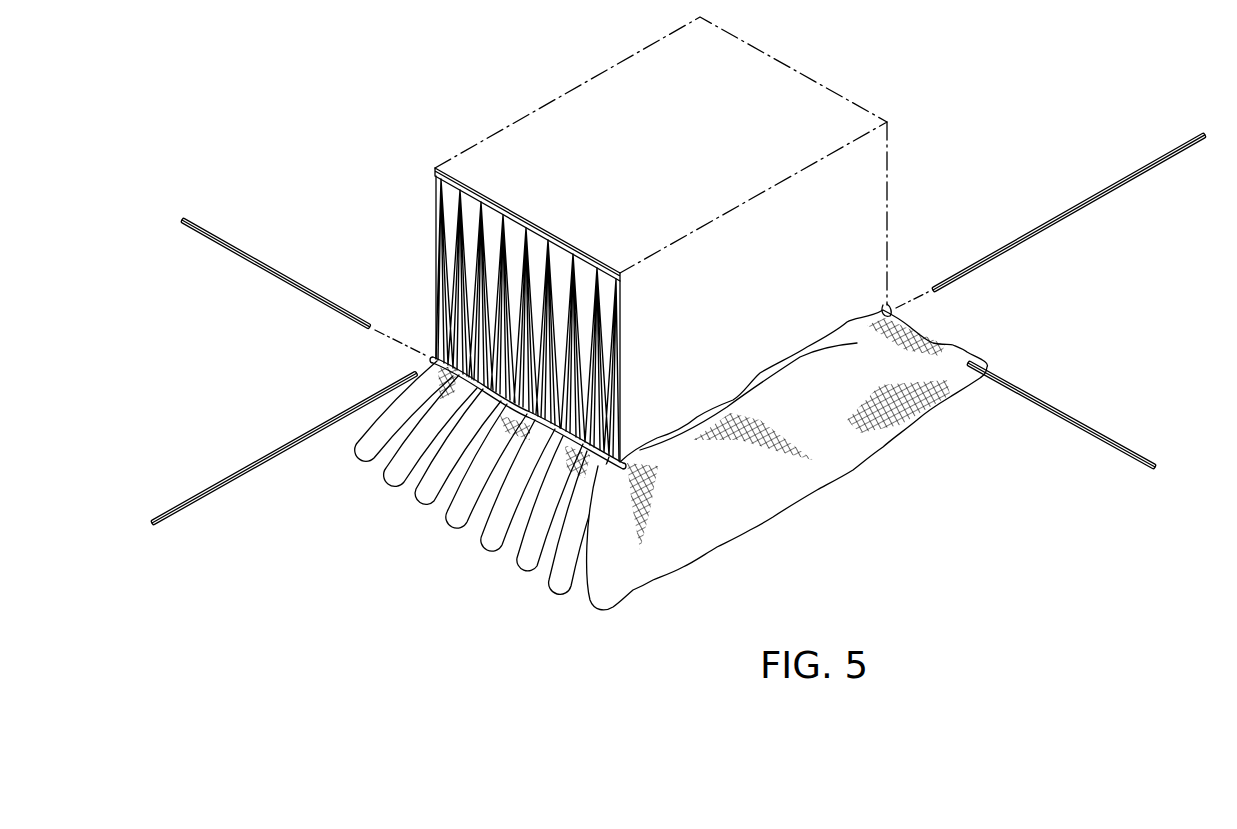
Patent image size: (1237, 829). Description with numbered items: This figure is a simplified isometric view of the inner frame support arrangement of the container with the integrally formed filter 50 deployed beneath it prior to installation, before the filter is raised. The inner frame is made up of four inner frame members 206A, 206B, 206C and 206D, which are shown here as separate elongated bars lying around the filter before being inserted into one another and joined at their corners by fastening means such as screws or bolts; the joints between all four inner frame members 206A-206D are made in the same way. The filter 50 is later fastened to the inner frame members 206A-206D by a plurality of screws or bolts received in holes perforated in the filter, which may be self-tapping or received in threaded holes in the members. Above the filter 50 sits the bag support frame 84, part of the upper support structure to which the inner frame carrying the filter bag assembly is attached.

The bag support frame 84 is at (437, 242).
The integrally formed filter 50 is at (957, 348).
The inner frame member 206A is at (297, 278).
The inner frame member 206B is at (237, 482).
The inner frame member 206C is at (1052, 217).
The inner frame member 206D is at (1097, 428).